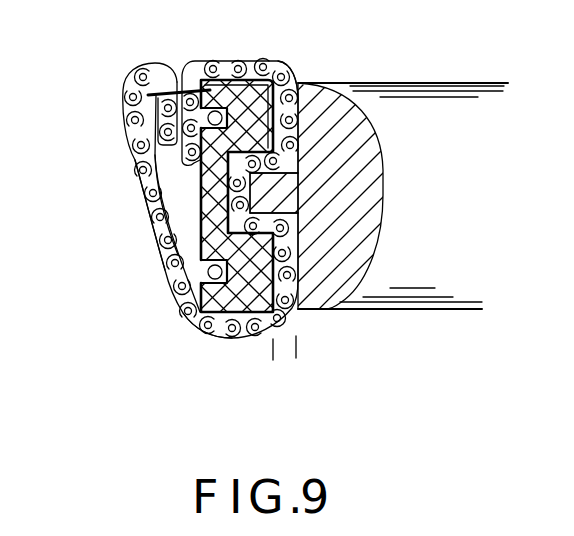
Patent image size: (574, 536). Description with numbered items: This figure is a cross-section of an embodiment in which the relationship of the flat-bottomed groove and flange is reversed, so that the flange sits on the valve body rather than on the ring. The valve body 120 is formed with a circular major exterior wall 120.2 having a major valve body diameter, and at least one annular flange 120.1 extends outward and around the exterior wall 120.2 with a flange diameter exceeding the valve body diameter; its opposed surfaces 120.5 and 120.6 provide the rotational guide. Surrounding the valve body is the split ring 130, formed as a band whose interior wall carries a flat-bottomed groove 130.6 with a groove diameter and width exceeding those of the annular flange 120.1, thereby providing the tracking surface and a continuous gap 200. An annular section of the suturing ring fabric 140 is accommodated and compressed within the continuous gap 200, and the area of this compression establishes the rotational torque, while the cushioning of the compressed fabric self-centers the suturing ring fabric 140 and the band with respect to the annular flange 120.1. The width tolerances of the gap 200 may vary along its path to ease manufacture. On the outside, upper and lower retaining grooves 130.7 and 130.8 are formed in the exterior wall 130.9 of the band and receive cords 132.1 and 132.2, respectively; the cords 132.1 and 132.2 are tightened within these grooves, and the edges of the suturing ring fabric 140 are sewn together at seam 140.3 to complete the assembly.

The valve body 120 is at (383, 192).
The annular flange 120.1 is at (254, 175).
The major exterior wall 120.2 is at (298, 121).
The opposed surface of annular flange 120.5 is at (298, 172).
The opposed surface of annular flange 120.6 is at (298, 211).
The split ring 130 is at (295, 312).
The flat-bottomed groove 130.6 is at (216, 233).
The upper retaining groove 130.7 is at (287, 77).
The lower retaining groove 130.8 is at (198, 325).
The exterior wall of band 130.9 is at (222, 188).
The cord 132.1 is at (220, 112).
The cord 132.2 is at (210, 278).
The suturing ring fabric 140 is at (234, 330).
The seam 140.3 is at (175, 88).
The continuous gap 200 is at (289, 364).